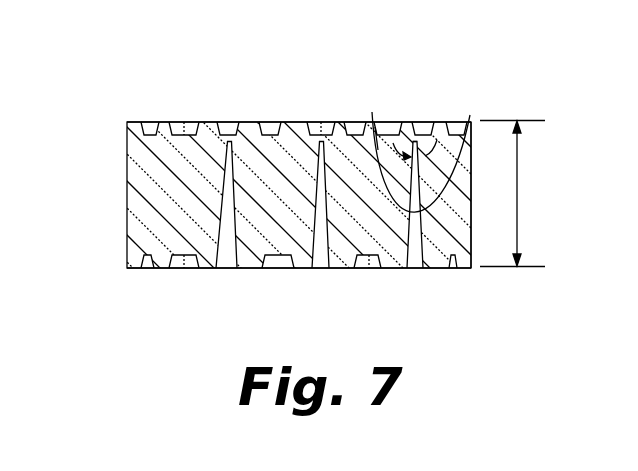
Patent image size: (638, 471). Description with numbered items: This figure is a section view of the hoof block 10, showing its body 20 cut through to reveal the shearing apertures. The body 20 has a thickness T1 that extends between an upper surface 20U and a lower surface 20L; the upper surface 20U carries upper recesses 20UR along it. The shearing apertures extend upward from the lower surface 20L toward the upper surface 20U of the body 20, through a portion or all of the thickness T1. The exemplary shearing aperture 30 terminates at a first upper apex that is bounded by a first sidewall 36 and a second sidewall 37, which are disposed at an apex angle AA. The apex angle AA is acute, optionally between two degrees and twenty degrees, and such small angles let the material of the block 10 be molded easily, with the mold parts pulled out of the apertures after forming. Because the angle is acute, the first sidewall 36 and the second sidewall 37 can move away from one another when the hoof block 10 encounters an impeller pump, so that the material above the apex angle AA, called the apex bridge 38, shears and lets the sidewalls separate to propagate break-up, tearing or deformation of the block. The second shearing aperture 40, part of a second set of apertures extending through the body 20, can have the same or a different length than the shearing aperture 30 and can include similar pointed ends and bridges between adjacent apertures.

The hoof block 10 is at (125, 88).
The body 20 is at (126, 135).
The upper surface 20U is at (137, 121).
The lower surface 20L is at (137, 267).
The upper recesses 20UR is at (230, 128).
The shearing aperture 30 is at (413, 260).
The second shearing aperture 40 is at (329, 280).
The first sidewall 36 is at (375, 127).
The apex bridge 38 is at (415, 140).
The second sidewall 37 is at (469, 118).
The apex angle AA is at (431, 137).
The thickness T1 is at (512, 194).